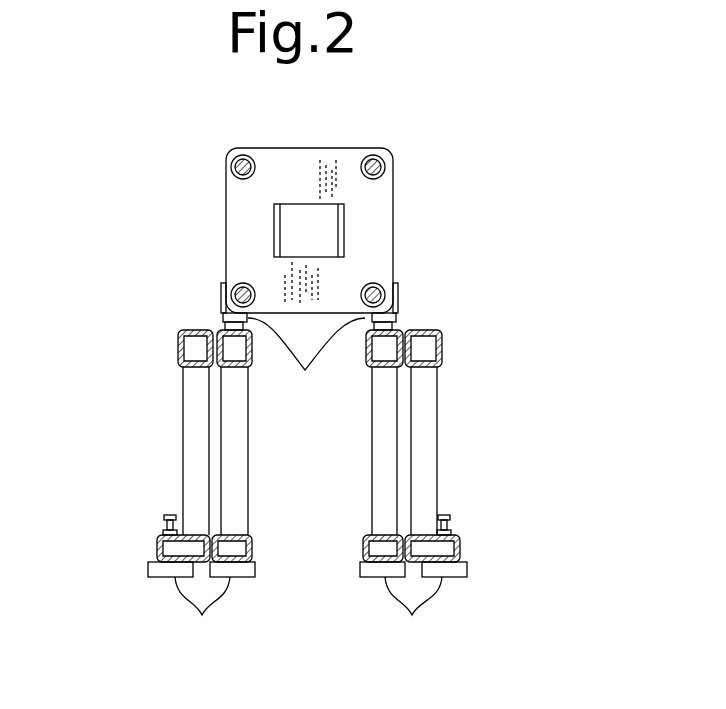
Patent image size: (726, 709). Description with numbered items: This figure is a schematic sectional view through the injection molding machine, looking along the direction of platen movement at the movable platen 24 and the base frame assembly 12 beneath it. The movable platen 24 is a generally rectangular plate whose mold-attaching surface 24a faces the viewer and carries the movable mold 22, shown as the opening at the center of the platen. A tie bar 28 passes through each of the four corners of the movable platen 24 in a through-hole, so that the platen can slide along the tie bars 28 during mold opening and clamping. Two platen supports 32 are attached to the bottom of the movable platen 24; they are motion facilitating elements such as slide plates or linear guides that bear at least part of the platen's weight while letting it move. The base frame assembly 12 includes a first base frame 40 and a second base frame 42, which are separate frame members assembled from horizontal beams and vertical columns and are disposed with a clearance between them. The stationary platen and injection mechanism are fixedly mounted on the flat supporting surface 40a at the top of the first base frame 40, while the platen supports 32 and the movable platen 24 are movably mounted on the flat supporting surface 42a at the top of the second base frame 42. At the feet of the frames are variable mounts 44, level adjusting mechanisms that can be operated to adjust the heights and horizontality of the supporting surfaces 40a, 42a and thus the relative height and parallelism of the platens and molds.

The base frame assembly 12 is at (450, 437).
The movable mold 22 is at (302, 203).
The movable platen 24 is at (226, 216).
The mold-attaching surface 24a is at (383, 208).
The tie bar 28 is at (386, 160).
The platen support 32 is at (222, 316).
The first base frame 40 is at (188, 442).
The supporting surface 40a is at (185, 330).
The second base frame 42 is at (240, 463).
The supporting surface 42a is at (306, 361).
The variable mount 44 is at (307, 583).